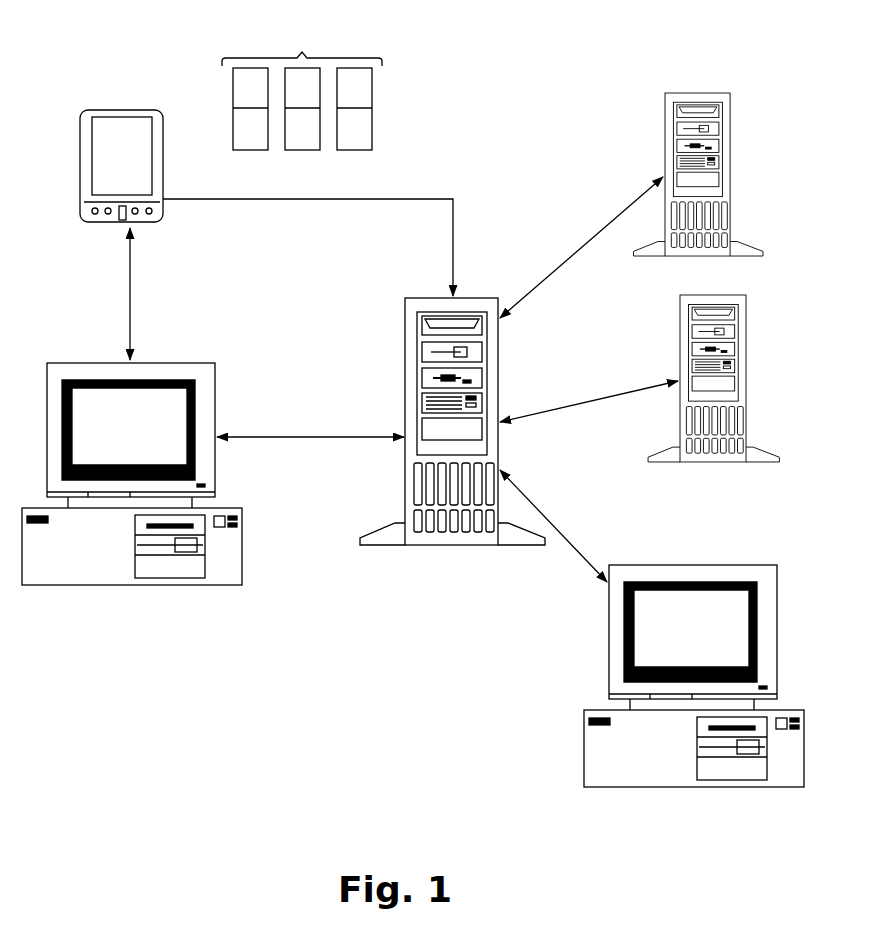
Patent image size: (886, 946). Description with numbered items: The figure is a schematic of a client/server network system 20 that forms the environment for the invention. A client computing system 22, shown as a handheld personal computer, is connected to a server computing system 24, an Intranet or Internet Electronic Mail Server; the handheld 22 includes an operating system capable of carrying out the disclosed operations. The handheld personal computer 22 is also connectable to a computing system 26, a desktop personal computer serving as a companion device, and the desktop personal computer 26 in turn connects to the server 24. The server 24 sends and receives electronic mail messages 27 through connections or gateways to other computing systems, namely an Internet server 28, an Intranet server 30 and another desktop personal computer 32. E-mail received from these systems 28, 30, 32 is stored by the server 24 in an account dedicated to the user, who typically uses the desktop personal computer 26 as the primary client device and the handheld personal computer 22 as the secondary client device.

The client/server network system 20 is at (313, 703).
The client computing system 22 is at (156, 193).
The server computing system 24 is at (405, 383).
The computing system 26 is at (233, 547).
The electronic mail messages 27 is at (350, 143).
The Internet server 28 is at (738, 392).
The Intranet server 30 is at (722, 185).
The desktop personal computer 32 is at (589, 764).